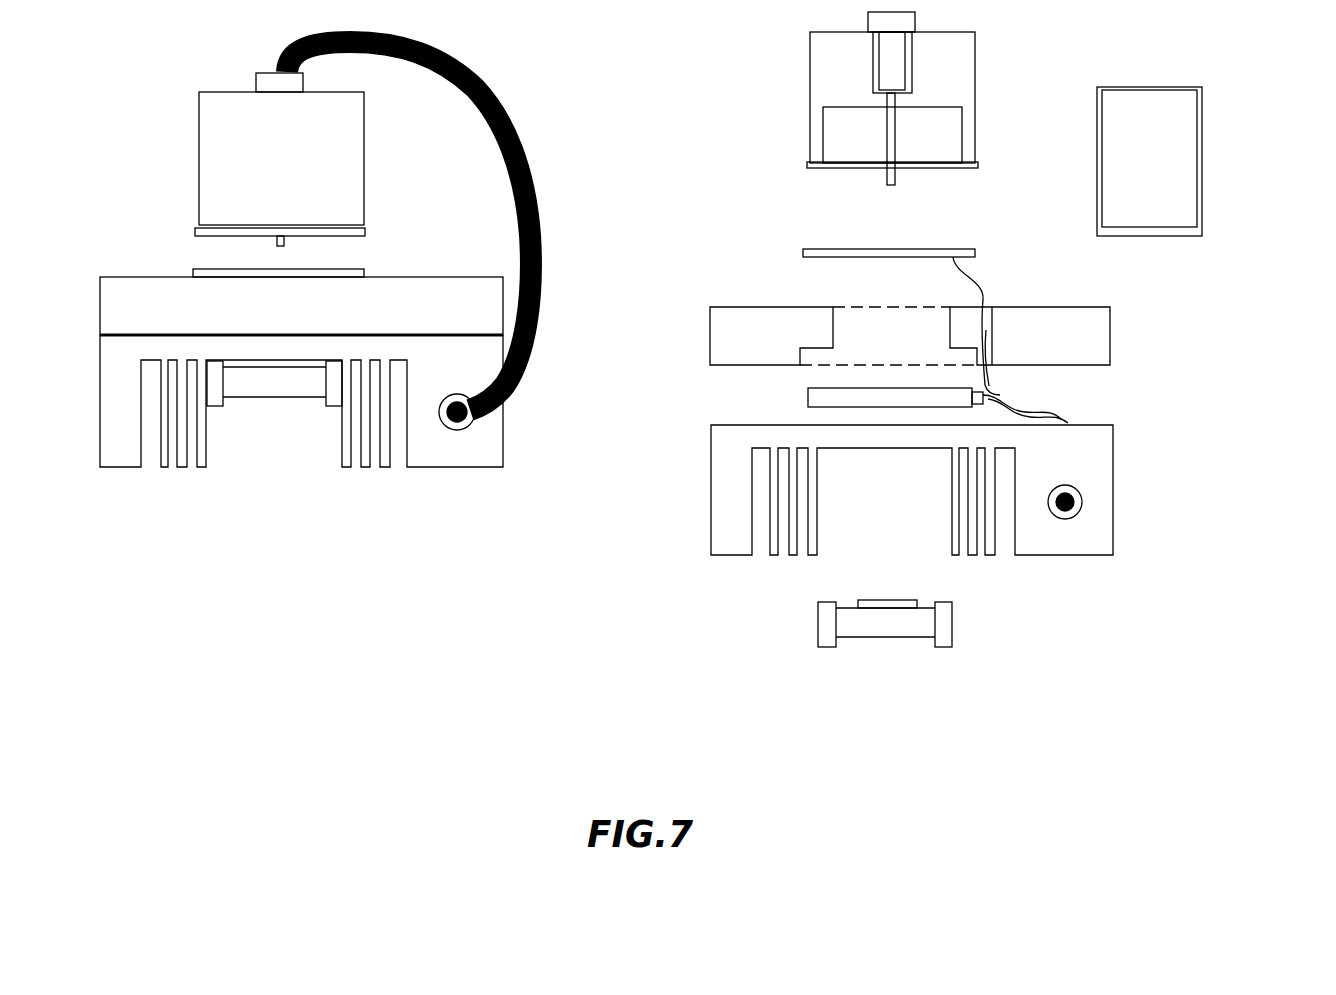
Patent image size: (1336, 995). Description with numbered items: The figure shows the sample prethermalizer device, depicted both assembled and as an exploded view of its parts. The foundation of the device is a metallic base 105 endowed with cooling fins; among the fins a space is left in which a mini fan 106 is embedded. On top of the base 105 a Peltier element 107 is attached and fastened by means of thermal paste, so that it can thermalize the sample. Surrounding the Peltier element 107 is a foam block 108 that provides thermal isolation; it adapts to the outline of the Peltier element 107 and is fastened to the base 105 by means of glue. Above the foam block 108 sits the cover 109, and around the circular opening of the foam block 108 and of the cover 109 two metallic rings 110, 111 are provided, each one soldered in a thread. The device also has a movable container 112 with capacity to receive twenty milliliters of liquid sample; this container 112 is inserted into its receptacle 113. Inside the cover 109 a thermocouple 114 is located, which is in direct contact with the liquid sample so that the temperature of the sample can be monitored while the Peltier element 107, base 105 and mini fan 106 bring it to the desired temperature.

The metallic base 105 is at (1125, 447).
The mini fan 106 is at (817, 617).
The Peltier element 107 is at (1002, 391).
The foam block 108 is at (748, 300).
The cover 109 is at (788, 72).
The metallic ring 110 is at (957, 177).
The metallic ring 111 is at (800, 242).
The movable container 112 is at (1205, 146).
The receptacle 113 is at (890, 332).
The thermocouple 114 is at (887, 127).